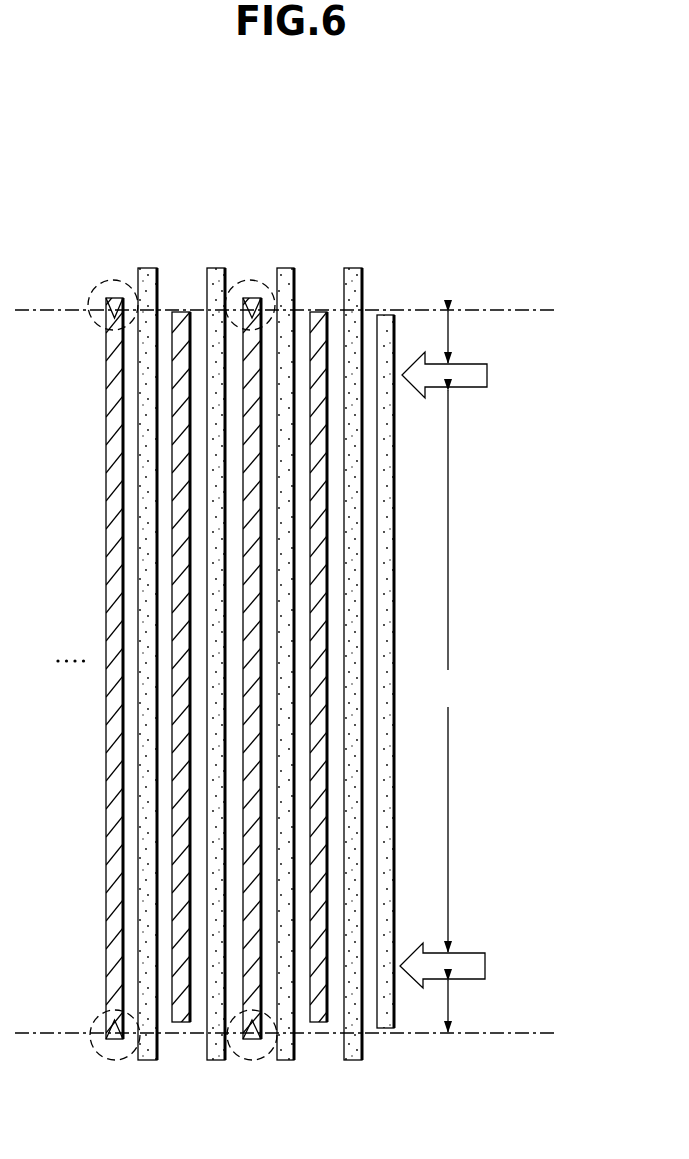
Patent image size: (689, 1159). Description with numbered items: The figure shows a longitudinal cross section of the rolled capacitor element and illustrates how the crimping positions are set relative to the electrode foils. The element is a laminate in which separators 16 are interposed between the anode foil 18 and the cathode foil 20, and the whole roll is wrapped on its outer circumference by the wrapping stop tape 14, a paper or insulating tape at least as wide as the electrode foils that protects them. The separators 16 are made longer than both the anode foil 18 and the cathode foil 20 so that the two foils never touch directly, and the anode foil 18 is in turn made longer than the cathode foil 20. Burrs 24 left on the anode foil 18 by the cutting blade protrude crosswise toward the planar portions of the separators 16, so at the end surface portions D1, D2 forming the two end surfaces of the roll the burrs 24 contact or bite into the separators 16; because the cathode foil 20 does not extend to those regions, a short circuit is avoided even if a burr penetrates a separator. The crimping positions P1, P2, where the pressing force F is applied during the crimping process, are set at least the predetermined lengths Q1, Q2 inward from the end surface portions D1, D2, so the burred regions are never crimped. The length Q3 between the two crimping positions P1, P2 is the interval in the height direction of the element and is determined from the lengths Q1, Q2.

The wrapping stop tape 14 is at (382, 314).
The separators 16 is at (143, 267).
The anode foil 18 is at (106, 350).
The cathode foil 20 is at (178, 311).
The burrs 24 is at (111, 272).
The pressing force F is at (454, 670).
The end surface portion D1 is at (307, 312).
The end surface portion D2 is at (306, 1034).
The crimping position P1 is at (394, 377).
The crimping position P2 is at (394, 968).
The predetermined length Q1 is at (452, 337).
The predetermined length Q2 is at (448, 1005).
The length between crimped parts Q3 is at (447, 671).